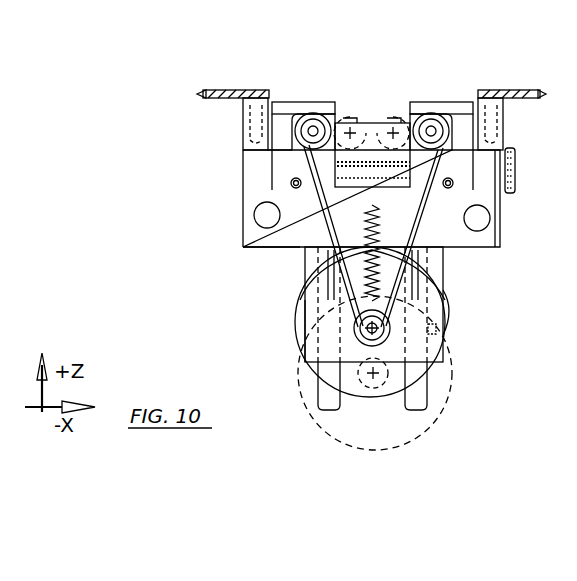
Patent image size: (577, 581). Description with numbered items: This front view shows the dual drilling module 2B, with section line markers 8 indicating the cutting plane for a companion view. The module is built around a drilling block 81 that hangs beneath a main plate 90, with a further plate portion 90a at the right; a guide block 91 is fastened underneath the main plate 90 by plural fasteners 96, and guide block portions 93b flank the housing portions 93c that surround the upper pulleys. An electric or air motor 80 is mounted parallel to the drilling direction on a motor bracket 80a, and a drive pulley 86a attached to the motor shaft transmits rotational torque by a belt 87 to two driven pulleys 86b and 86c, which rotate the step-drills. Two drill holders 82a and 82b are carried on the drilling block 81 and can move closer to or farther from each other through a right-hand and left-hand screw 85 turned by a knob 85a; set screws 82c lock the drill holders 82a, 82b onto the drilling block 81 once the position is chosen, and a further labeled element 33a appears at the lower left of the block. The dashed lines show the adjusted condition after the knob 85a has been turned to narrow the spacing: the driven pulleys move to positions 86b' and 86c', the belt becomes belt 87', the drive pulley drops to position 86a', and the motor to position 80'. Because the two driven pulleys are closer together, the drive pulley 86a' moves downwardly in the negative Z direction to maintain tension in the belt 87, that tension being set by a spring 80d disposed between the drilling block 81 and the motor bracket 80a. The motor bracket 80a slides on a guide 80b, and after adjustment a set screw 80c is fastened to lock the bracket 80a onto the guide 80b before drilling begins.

The section line 8- 8 is at (313, 185).
The dual drilling module 2B is at (206, 306).
The main plate 90 is at (207, 90).
The mounting plate 90a is at (485, 90).
The support column 93b is at (245, 103).
The pulley housing 93c is at (304, 102).
The guide block 91 is at (243, 128).
The fasteners 96 is at (268, 150).
The right-hand and left-hand screw 85 is at (372, 165).
The knob 85a is at (516, 172).
The driven pulley (adjusted position) 86b' is at (346, 108).
The driven pulley (adjusted position) 86c' is at (403, 108).
The driven pulley 86b is at (240, 190).
The driven pulley 86c is at (503, 203).
The drilling block 81 is at (270, 250).
The drill holder 82a is at (256, 212).
The drill holder 82b is at (486, 224).
The set screws 82c is at (488, 240).
The lower edge 33a is at (250, 243).
The electric or air motor 80 is at (400, 322).
The motor (adjusted position) 80' is at (408, 373).
The motor bracket 80a is at (305, 322).
The guide 80b is at (318, 400).
The set screw 80c is at (438, 334).
The spring 80d is at (320, 270).
The belt 87 is at (315, 236).
The belt (adjusted position) 87' is at (453, 237).
The drive pulley 86a is at (313, 339).
The drive pulley (adjusted position) 86a' is at (361, 406).